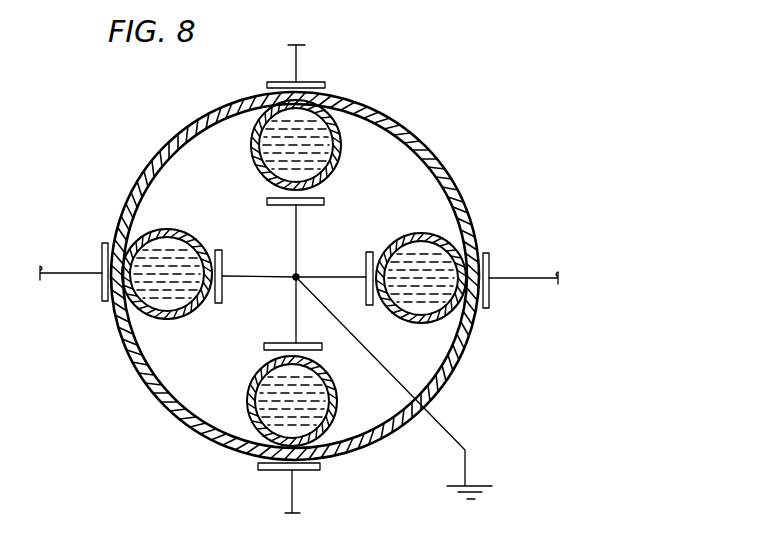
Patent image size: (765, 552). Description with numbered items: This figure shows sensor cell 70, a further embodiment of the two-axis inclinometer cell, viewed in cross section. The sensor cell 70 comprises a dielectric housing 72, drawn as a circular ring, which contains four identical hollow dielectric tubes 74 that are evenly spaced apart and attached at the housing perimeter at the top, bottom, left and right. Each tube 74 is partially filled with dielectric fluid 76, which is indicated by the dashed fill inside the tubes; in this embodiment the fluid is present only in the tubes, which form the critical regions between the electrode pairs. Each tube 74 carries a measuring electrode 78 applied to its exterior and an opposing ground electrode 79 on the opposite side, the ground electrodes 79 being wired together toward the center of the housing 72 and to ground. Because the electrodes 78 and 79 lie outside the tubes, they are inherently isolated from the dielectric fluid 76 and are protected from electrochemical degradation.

The sensor cell 70 is at (566, 198).
The dielectric housing 72 is at (387, 117).
The hollow dielectric tube 74 is at (337, 166).
The dielectric fluid 76 is at (428, 270).
The measuring electrode 78 is at (493, 304).
The ground electrode 79 is at (219, 248).